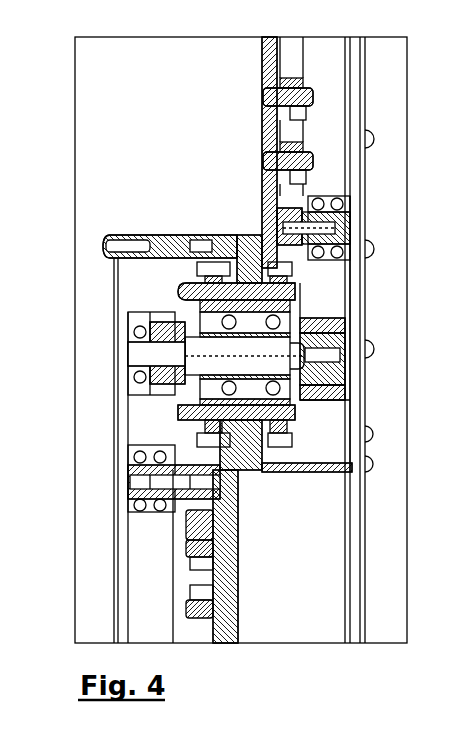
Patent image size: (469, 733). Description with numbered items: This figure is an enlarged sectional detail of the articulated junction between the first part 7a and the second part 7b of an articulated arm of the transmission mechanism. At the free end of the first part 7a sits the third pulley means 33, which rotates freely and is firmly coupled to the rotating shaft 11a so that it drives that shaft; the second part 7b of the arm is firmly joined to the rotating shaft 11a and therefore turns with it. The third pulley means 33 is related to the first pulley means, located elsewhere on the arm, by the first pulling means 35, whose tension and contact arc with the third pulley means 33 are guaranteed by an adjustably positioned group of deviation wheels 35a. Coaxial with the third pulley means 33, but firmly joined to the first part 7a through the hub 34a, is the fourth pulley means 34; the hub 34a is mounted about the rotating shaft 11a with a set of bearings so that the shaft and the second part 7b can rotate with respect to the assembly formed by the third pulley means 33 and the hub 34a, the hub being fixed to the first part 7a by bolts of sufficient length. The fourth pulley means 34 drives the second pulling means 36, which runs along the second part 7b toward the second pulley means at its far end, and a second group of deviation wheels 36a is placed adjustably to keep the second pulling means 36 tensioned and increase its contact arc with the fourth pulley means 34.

The first pulling means 35 is at (328, 118).
The group of deviation wheels 35a is at (355, 228).
The hub 34a is at (300, 283).
The first part of the articulated arm 7a is at (365, 318).
The third pulley means 33 is at (348, 388).
The fourth pulley means 34 is at (125, 318).
The rotating shaft 11a is at (128, 375).
The group of deviation wheels 36a is at (128, 482).
The second pulling means 36 is at (150, 569).
The second part of the articulated arm 7b is at (238, 583).